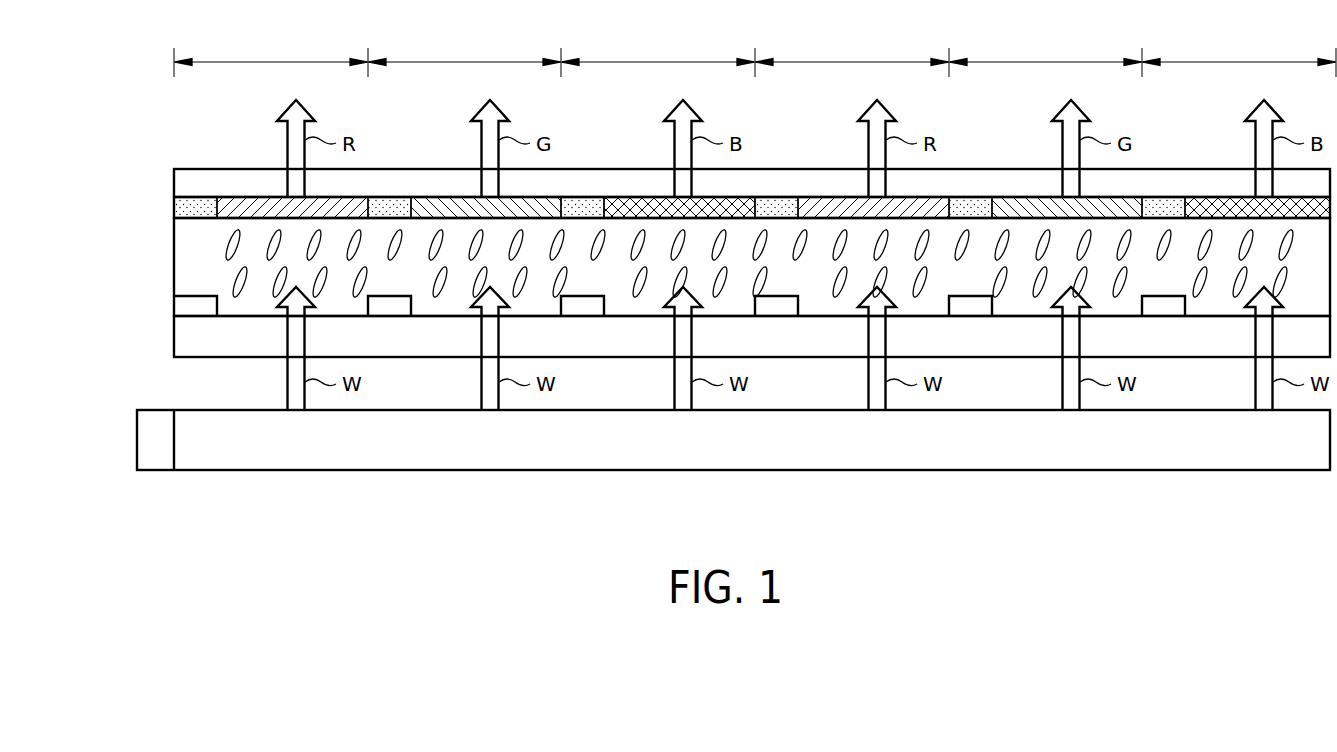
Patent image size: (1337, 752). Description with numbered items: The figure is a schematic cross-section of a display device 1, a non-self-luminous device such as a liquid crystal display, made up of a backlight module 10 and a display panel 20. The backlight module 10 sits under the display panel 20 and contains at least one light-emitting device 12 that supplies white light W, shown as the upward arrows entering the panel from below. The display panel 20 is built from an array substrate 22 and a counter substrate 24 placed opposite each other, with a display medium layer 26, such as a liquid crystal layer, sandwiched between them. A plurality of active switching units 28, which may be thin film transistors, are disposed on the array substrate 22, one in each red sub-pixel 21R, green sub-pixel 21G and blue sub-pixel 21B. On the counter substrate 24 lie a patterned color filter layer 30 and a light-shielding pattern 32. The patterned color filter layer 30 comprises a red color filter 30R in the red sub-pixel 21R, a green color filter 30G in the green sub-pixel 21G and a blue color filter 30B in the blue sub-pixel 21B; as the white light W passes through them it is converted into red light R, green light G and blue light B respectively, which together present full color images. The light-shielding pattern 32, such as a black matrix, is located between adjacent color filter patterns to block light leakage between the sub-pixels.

The display device 1 is at (63, 160).
The backlight module 10 is at (693, 441).
The light-emitting device 12 is at (158, 440).
The display panel 20 is at (115, 160).
The red sub-pixel 21R is at (561, 54).
The green sub-pixel 21G is at (755, 54).
The blue sub-pixel 21B is at (948, 54).
The array substrate 22 is at (790, 348).
The counter substrate 24 is at (174, 181).
The display medium layer 26 is at (174, 259).
The active switching unit 28 is at (182, 306).
The patterned color filter layer 30 is at (760, 158).
The red color filter 30R is at (252, 203).
The green color filter 30G is at (446, 203).
The blue color filter 30B is at (639, 203).
The light-shielding pattern 32 is at (721, 158).